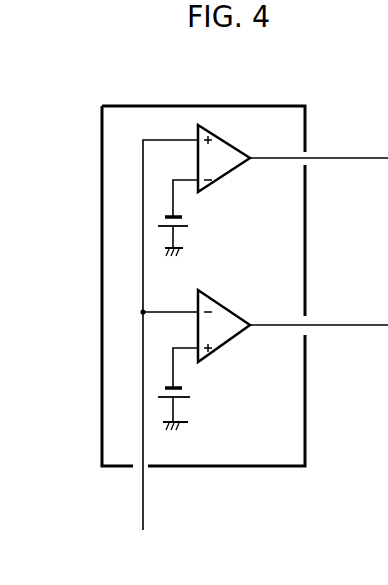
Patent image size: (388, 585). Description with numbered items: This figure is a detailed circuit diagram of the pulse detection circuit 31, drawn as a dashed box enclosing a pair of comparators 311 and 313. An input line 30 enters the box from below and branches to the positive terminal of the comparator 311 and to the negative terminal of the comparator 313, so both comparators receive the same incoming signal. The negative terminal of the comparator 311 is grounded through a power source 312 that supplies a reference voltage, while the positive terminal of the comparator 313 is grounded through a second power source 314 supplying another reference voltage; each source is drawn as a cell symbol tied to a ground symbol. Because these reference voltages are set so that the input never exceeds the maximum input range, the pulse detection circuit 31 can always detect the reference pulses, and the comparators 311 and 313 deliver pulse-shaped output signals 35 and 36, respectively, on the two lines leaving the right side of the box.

The input line 30 is at (143, 503).
The pulse detection circuit 31 is at (102, 222).
The comparator 311 is at (216, 141).
The power source 312 is at (184, 217).
The comparator 313 is at (229, 308).
The power source 314 is at (192, 389).
The signal 35 is at (371, 156).
The signal 36 is at (371, 323).